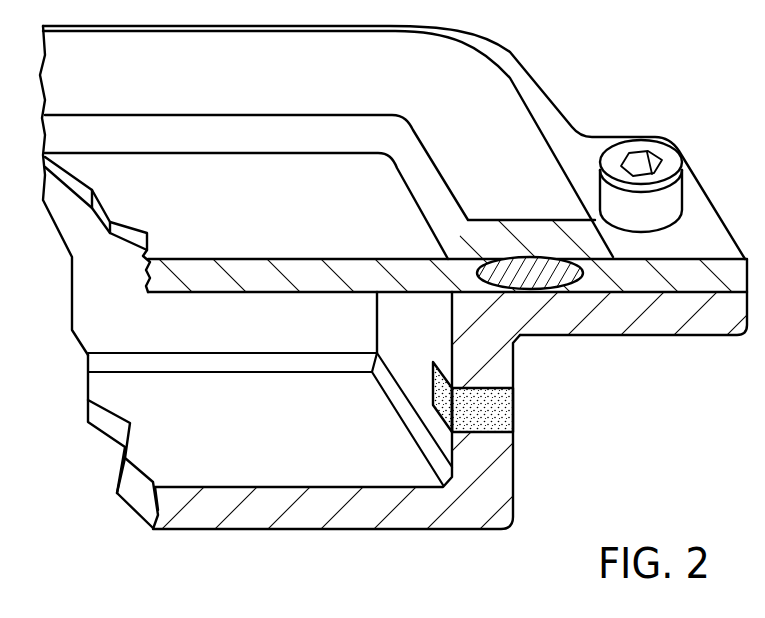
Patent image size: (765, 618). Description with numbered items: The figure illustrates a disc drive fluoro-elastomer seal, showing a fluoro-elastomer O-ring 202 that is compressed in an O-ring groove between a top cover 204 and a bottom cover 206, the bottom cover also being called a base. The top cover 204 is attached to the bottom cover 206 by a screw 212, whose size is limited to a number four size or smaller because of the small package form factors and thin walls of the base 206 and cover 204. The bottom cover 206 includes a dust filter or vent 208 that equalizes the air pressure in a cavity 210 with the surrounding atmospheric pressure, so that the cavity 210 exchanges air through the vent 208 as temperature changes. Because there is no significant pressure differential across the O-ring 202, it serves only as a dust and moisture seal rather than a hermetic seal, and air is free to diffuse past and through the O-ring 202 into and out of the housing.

The fluoro-elastomer O-ring 202 is at (537, 277).
The top cover 204 is at (520, 88).
The bottom cover 206 is at (263, 530).
The vent 208 is at (514, 412).
The cavity 210 is at (263, 427).
The screw 212 is at (615, 153).